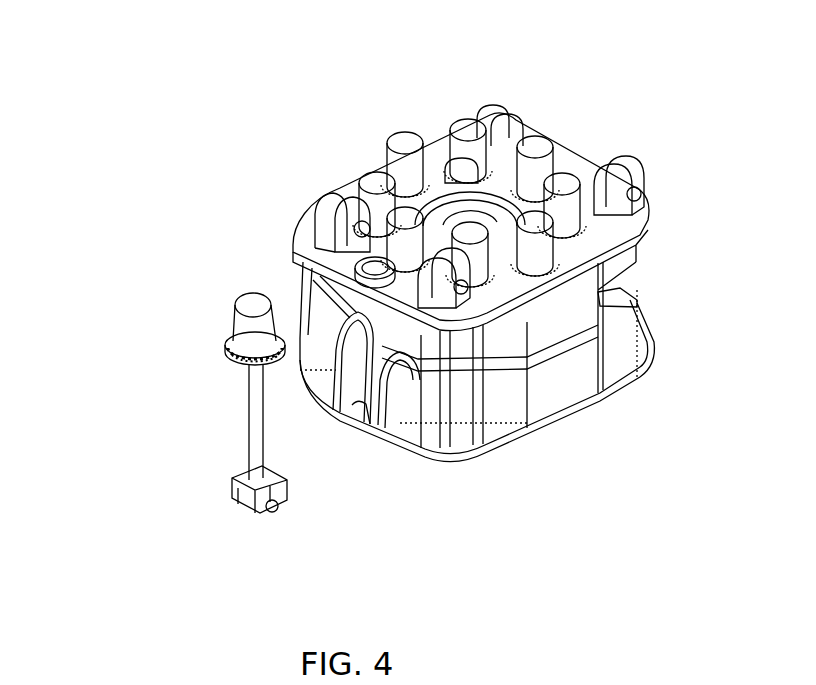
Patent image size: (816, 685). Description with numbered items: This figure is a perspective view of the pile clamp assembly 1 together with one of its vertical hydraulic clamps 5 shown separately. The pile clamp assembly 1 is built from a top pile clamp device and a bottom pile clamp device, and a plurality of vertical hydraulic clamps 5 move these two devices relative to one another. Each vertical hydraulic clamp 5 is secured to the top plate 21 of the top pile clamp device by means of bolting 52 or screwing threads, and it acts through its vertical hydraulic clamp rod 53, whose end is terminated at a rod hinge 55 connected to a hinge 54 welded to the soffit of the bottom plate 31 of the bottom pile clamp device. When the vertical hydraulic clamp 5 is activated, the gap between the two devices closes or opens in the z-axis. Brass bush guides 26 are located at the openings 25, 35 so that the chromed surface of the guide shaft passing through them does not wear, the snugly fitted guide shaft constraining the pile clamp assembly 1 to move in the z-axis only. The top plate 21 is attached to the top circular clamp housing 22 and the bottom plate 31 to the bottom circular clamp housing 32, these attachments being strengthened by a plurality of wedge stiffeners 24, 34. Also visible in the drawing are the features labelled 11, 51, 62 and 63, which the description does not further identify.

The pile clamp assembly 1 is at (322, 97).
The central opening 11 is at (430, 178).
The top plate 21 is at (636, 220).
The top circular clamp housing 22 is at (622, 292).
The wedge stiffener 24 is at (650, 256).
The opening 25 is at (589, 147).
The brass bush guide 26 is at (592, 126).
The bottom plate 31 is at (642, 374).
The bottom circular clamp housing 32 is at (598, 392).
The wedge stiffener 34 is at (650, 334).
The opening 35 is at (360, 424).
The vertical hydraulic clamp 5 is at (154, 387).
The cylinder 51 is at (227, 306).
The bolting 52 is at (220, 356).
The vertical hydraulic clamp rod 53 is at (228, 441).
The hinge 54 is at (205, 506).
The rod hinge 55 is at (247, 535).
The clevis 62 is at (629, 183).
The clevis 63 is at (632, 157).